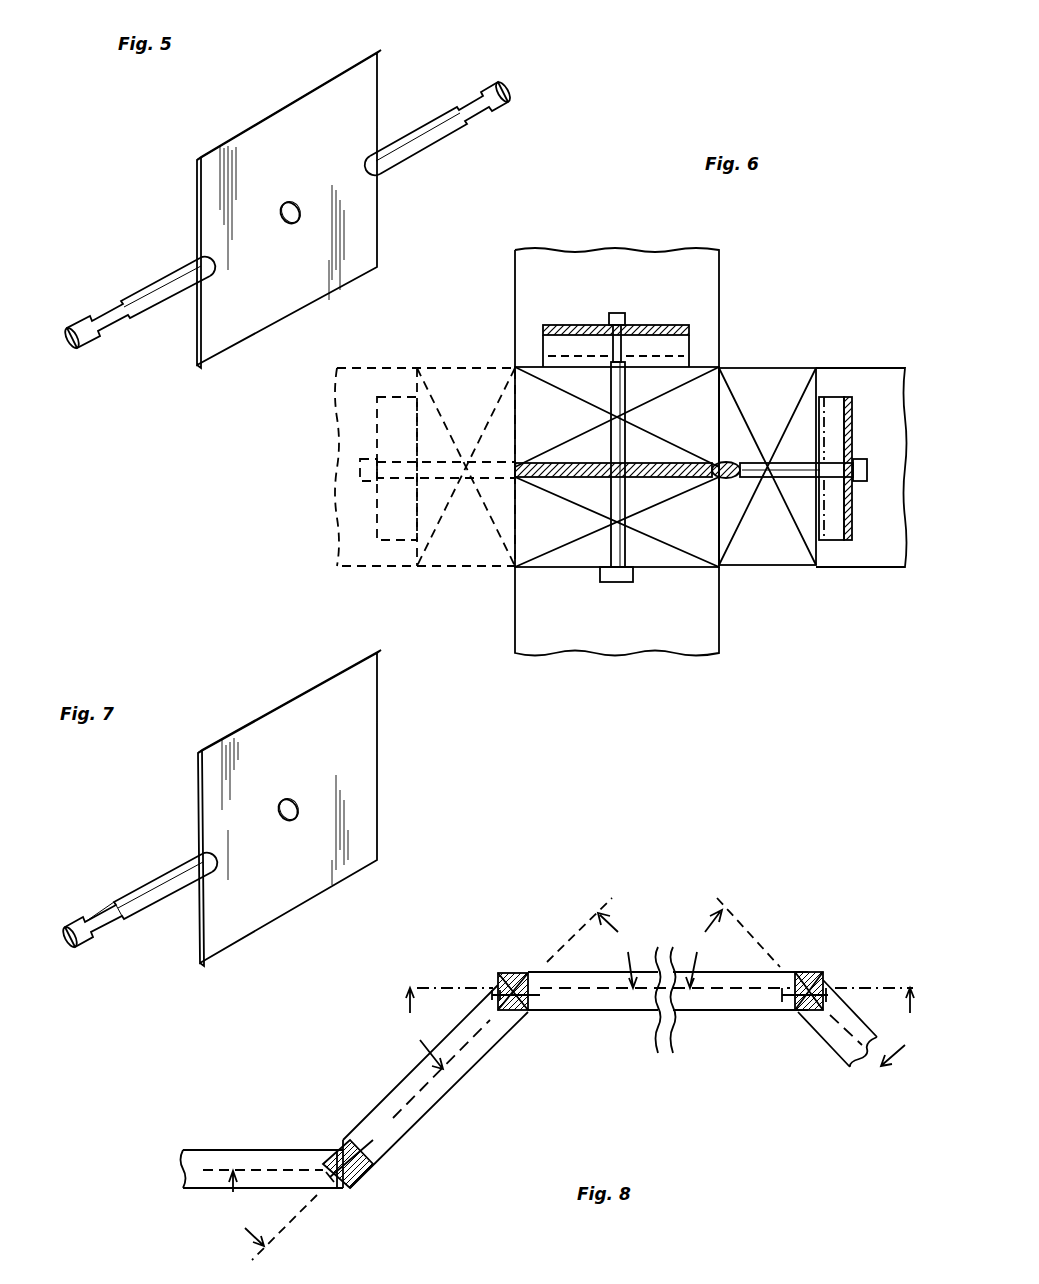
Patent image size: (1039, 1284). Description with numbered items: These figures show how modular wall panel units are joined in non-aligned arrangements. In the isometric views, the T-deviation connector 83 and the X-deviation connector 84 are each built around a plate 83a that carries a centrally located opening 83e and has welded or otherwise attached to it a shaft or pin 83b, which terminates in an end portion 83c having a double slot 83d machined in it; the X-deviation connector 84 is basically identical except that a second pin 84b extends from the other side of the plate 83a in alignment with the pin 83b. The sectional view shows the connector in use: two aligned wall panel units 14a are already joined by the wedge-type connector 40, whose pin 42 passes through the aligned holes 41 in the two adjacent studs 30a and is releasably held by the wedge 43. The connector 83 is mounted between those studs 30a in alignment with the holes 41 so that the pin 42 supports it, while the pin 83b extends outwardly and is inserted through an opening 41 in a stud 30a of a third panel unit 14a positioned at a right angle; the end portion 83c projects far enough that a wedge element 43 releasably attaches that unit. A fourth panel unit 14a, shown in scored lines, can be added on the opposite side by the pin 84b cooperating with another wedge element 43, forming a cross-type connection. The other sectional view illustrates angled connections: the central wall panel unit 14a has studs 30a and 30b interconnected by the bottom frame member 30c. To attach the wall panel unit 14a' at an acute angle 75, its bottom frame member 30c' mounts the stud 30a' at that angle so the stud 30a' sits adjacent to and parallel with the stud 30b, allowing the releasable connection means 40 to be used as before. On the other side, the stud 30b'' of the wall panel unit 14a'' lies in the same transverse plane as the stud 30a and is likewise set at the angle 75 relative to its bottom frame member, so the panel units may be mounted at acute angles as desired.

In FIG. 6, the wall panel unit 14a is at (629, 438).
In FIG. 8, the wall panel unit 14a is at (489, 1067).
In FIG. 8, the wall panel unit 14a' is at (435, 1086).
In FIG. 8, the wall panel unit 14a'' is at (873, 1094).
In FIG. 6, the stud 30a is at (575, 456).
In FIG. 8, the stud 30a is at (781, 940).
In FIG. 8, the stud 30a' is at (523, 1040).
In FIG. 8, the stud 30b is at (516, 935).
In FIG. 8, the stud 30b'' is at (820, 1030).
In FIG. 8, the bottom stud or frame member 30c is at (604, 1034).
In FIG. 8, the bottom frame member 30c' is at (370, 1067).
In FIG. 6, the wedge-type connector 40 is at (540, 356).
In FIG. 8, the wedge-type connector 40 is at (370, 1170).
In FIG. 6, the hole 41 is at (748, 460).
In FIG. 6, the pin 42 is at (617, 535).
In FIG. 6, the wedge 43 is at (553, 325).
In FIG. 8, the acute angle 75 is at (573, 1079).
In FIG. 7, the T-deviation connector 83 is at (368, 807).
In FIG. 5, the plate 83a is at (236, 340).
In FIG. 6, the plate 83a is at (560, 462).
In FIG. 7, the plate 83a is at (360, 717).
In FIG. 5, the shaft or pin 83b is at (147, 285).
In FIG. 6, the shaft or pin 83b is at (797, 474).
In FIG. 7, the shaft or pin 83b is at (165, 873).
In FIG. 6, the end portion 83c is at (865, 482).
In FIG. 7, the end portion 83c is at (67, 930).
In FIG. 7, the double slot 83d is at (88, 915).
In FIG. 5, the opening 83e is at (288, 202).
In FIG. 7, the opening 83e is at (290, 800).
In FIG. 5, the X-deviation connector 84 is at (377, 80).
In FIG. 5, the second pin 84b is at (430, 120).
In FIG. 6, the second pin 84b is at (432, 500).